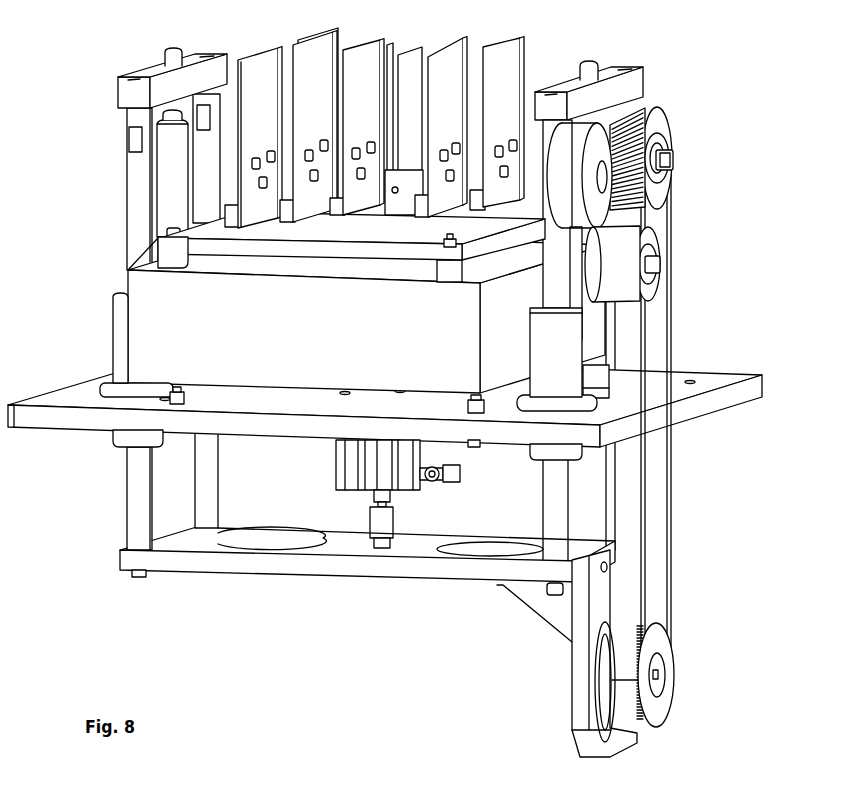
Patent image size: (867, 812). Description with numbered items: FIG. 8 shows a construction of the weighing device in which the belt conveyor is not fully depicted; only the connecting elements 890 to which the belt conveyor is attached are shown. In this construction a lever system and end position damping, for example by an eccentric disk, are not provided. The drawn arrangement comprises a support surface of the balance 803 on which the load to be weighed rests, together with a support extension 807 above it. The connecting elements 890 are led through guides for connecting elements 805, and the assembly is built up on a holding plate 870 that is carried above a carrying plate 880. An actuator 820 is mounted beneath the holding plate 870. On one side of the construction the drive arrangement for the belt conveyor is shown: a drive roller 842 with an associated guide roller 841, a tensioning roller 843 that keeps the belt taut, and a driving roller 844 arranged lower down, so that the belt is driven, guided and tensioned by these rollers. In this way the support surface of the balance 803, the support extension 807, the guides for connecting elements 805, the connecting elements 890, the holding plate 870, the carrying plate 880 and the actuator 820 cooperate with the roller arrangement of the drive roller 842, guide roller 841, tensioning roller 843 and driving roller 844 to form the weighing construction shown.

The support surface of the balance 803 is at (182, 247).
The guide for connecting elements 805 is at (120, 335).
The support extension 807 is at (450, 90).
The actuator 820 is at (347, 455).
The guide roller 841 is at (653, 193).
The drive roller 842 is at (598, 142).
The tensioning roller 843 is at (627, 238).
The driving roller 844 is at (652, 708).
The holding plate 870 is at (722, 383).
The carrying plate 880 is at (158, 565).
The connecting elements 890 is at (132, 202).